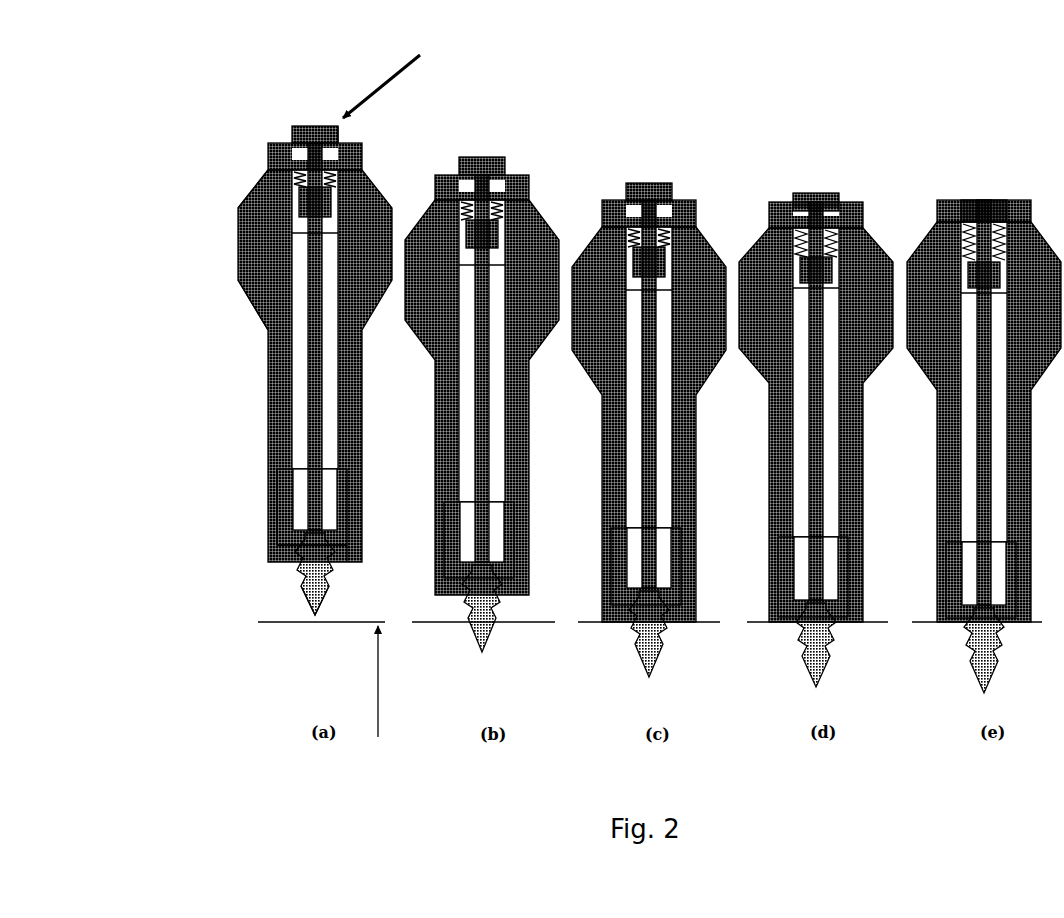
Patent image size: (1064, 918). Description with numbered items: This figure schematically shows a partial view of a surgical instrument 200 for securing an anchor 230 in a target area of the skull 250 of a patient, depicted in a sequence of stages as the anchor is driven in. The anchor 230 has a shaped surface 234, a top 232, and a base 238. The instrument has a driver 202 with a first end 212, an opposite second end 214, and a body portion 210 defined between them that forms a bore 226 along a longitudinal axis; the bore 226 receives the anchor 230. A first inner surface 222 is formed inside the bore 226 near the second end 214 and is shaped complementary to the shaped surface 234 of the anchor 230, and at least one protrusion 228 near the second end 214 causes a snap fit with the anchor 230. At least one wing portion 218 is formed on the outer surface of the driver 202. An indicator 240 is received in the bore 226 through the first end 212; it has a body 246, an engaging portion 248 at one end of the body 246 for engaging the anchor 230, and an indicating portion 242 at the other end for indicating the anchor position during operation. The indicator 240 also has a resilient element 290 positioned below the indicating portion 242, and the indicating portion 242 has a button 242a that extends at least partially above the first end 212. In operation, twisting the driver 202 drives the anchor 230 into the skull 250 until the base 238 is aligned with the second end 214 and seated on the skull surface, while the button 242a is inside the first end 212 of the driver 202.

The surgical instrument 200 is at (178, 55).
The driver 202 is at (238, 250).
The body portion 210 is at (240, 207).
The first end 212 is at (275, 136).
The second end 214 is at (273, 562).
The wing portion 218 is at (239, 290).
The first inner surface 222 is at (278, 525).
The bore 226 is at (333, 222).
The protrusion 228 is at (352, 564).
The anchor 230 is at (292, 612).
The top 232 is at (279, 468).
The shaped surface 234 is at (274, 488).
The base 238 is at (284, 570).
The indicator 240 is at (402, 77).
The indicating portion 242 is at (314, 124).
The button 242a is at (330, 140).
The body 246 is at (308, 332).
The engaging portion 248 is at (286, 552).
The skull 250 is at (381, 700).
The resilient element 290 is at (300, 182).